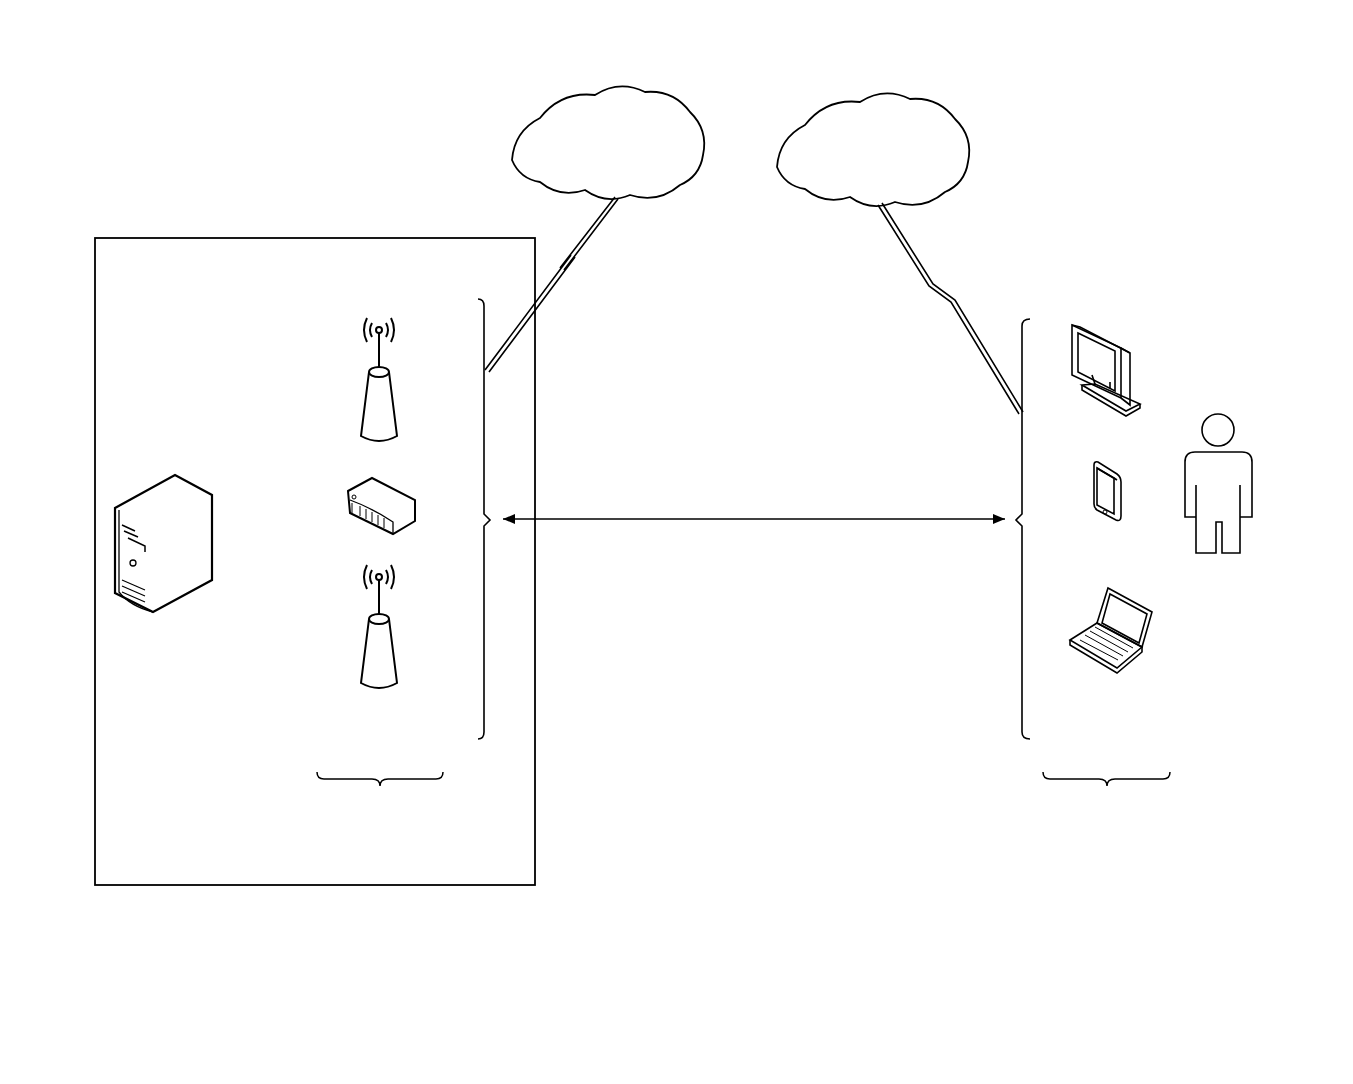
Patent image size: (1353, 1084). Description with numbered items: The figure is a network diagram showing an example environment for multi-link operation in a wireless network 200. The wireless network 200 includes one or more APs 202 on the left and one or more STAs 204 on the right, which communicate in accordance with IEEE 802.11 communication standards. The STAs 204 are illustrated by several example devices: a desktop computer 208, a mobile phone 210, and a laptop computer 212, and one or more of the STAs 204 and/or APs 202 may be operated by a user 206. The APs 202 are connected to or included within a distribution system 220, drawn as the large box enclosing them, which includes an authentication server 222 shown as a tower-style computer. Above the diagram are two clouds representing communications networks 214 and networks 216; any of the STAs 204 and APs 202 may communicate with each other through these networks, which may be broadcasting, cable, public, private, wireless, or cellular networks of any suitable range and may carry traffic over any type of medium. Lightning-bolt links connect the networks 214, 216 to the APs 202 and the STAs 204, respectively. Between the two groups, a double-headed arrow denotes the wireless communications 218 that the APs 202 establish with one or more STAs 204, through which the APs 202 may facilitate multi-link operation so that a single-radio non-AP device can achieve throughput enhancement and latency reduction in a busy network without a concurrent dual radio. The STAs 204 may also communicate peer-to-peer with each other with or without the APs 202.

The wireless network 200 is at (1226, 100).
The APs 202 is at (357, 780).
The STAs 204 is at (1085, 780).
The user 206 is at (1250, 452).
The example device 208 is at (1120, 418).
The example device 210 is at (1108, 522).
The example device 212 is at (1120, 668).
The communications networks 214 is at (545, 124).
The networks 216 is at (955, 130).
The wireless communications 218 is at (752, 521).
The distribution system 220 is at (435, 219).
The authentication server 222 is at (188, 480).